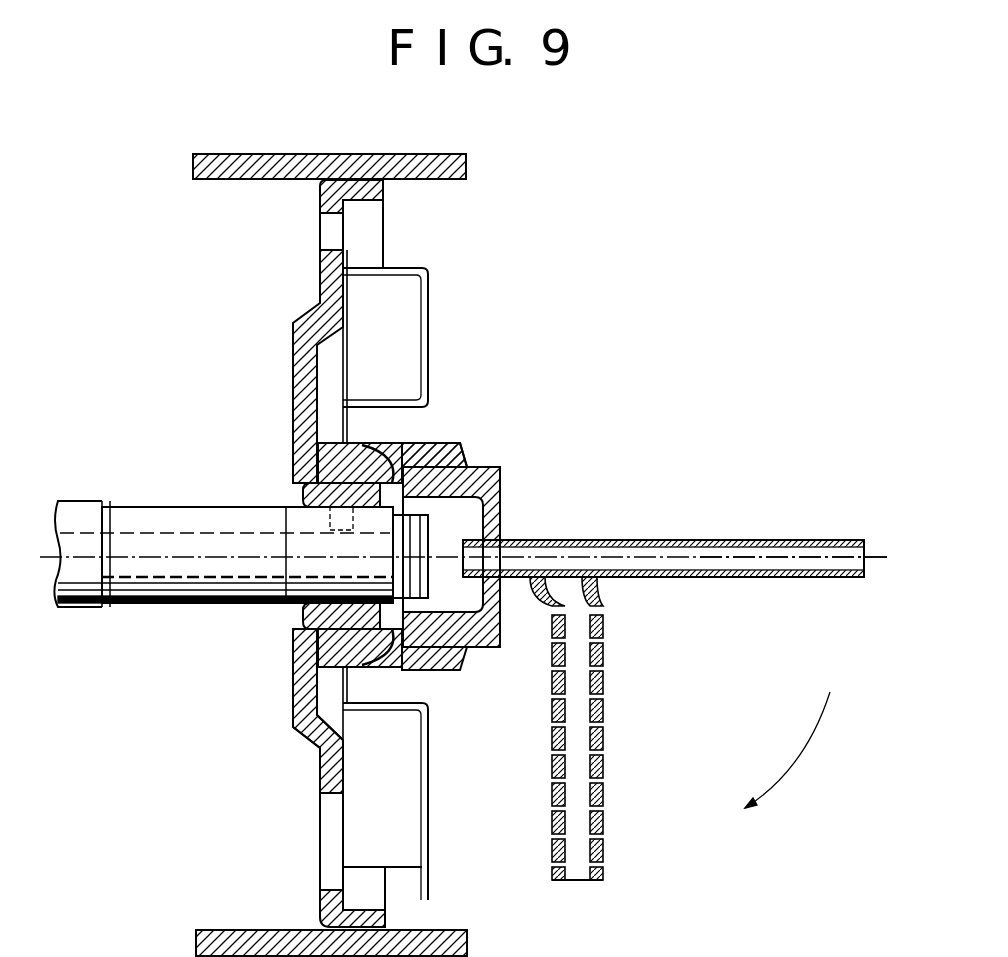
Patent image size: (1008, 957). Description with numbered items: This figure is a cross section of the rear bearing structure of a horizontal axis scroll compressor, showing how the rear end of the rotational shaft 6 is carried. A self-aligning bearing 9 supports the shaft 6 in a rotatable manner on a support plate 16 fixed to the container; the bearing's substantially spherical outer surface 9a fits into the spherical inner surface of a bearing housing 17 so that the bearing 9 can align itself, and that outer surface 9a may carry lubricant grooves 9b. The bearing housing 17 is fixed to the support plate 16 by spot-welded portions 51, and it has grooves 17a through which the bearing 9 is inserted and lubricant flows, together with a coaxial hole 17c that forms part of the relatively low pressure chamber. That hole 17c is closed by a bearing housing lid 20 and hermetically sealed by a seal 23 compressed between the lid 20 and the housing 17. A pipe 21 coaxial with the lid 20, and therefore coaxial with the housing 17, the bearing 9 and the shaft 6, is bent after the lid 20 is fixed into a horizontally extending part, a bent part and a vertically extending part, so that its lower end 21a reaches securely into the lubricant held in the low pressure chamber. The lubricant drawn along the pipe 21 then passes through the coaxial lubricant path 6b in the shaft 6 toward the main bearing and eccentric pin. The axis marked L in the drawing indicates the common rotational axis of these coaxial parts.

The rotational shaft 6 is at (241, 589).
The coaxial lubricant path 6b is at (132, 607).
The self-aligning bearing 9 is at (315, 508).
The spherical outer surface 9a is at (300, 497).
The lubricant grooves 9b is at (372, 443).
The support plate 16 is at (297, 657).
The bearing housing 17 is at (335, 657).
The grooves 17a is at (383, 668).
The coaxial hole 17c is at (405, 443).
The bearing housing lid 20 is at (500, 470).
The pipe 21 is at (625, 540).
The lower end of pipe 21a is at (864, 583).
The seal 23 is at (433, 443).
The spot-welded portions 51 is at (296, 727).
The axis line L is at (790, 556).